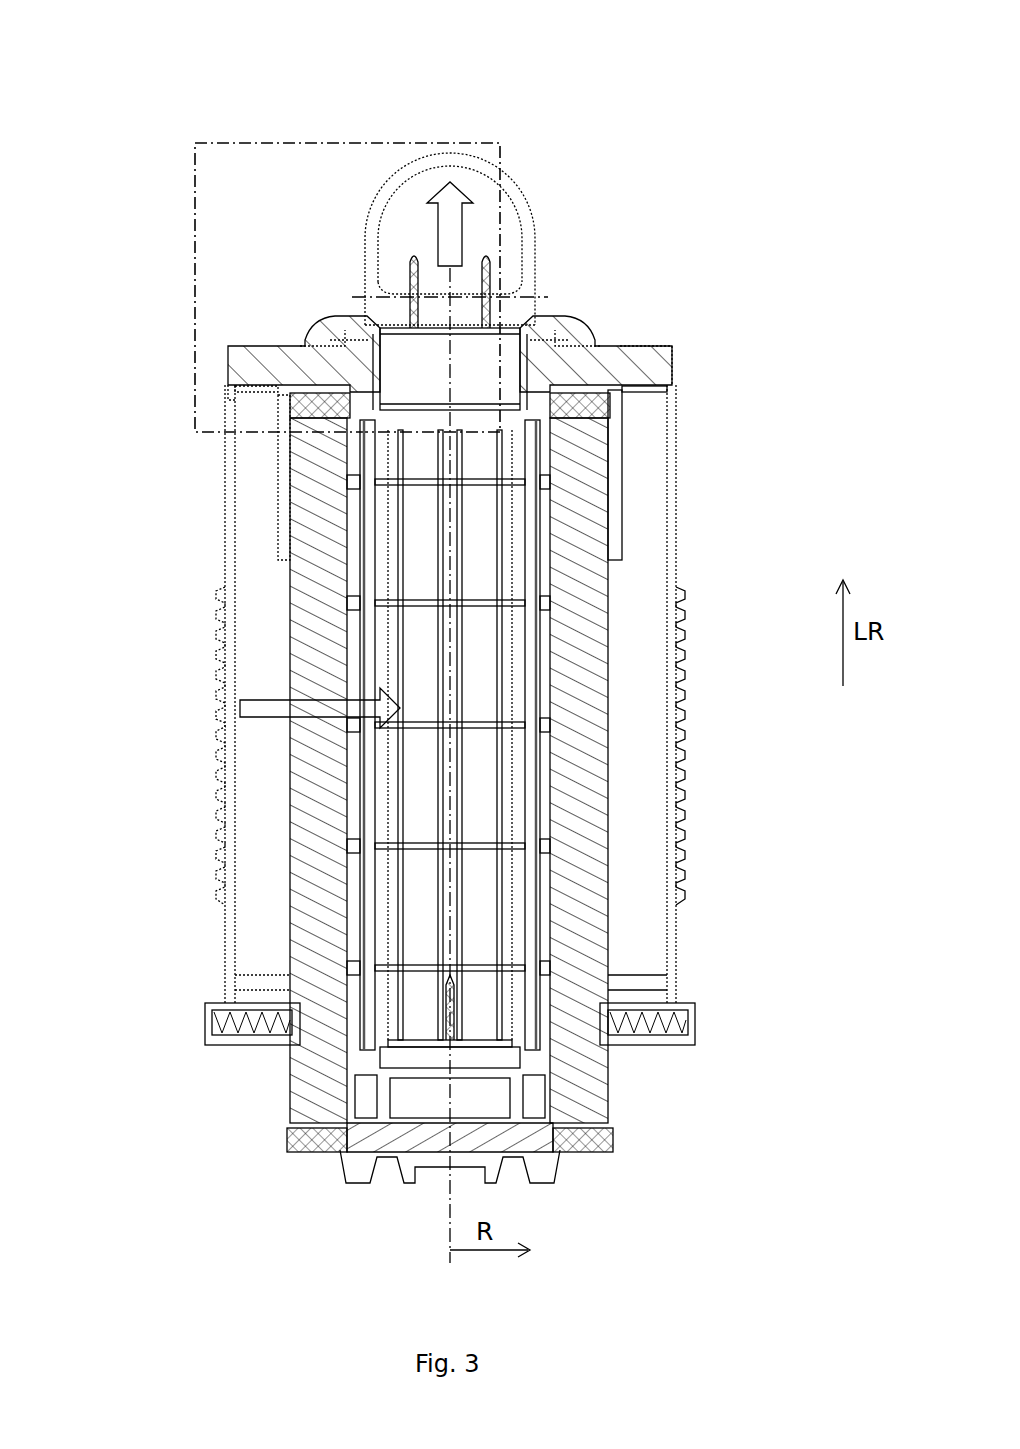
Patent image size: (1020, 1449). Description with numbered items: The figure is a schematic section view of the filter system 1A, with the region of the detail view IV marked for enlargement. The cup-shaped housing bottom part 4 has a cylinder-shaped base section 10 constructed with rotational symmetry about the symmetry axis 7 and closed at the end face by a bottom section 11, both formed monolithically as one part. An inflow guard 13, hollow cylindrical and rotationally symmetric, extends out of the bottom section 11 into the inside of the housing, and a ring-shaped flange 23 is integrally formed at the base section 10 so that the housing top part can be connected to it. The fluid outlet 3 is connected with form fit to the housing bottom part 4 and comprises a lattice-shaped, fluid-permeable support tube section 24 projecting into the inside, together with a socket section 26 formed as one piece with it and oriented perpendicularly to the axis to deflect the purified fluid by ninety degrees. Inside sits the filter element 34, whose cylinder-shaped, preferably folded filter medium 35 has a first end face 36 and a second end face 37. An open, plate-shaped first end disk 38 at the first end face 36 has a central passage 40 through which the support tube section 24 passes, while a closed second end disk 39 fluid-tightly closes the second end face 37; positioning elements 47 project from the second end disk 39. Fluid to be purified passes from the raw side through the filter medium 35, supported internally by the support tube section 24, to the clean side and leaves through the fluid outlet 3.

The filter system 1A is at (396, 70).
The fluid outlet 3 is at (520, 182).
The housing bottom part 4 is at (641, 332).
The symmetry axis 7 is at (446, 1237).
The base section 10 is at (676, 542).
The bottom section 11 is at (268, 346).
The inflow guard 13 is at (622, 495).
The flange 23 is at (695, 1030).
The support tube section 24 is at (540, 891).
The socket section 26 is at (528, 218).
The filter element 34 is at (622, 1082).
The filter medium 35 is at (593, 798).
The first end face 36 is at (297, 393).
The second end face 37 is at (588, 1160).
The first end disk 38 is at (612, 412).
The second end disk 39 is at (280, 1143).
The passage 40 is at (450, 369).
The positioning elements 47 is at (340, 1170).
The detail view IV is at (195, 282).